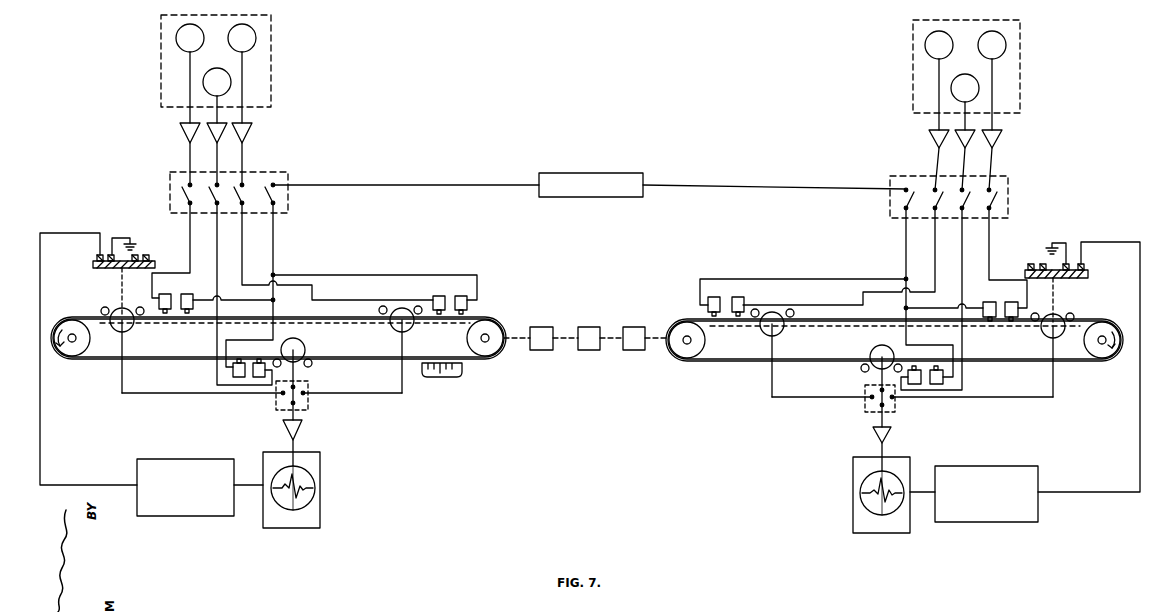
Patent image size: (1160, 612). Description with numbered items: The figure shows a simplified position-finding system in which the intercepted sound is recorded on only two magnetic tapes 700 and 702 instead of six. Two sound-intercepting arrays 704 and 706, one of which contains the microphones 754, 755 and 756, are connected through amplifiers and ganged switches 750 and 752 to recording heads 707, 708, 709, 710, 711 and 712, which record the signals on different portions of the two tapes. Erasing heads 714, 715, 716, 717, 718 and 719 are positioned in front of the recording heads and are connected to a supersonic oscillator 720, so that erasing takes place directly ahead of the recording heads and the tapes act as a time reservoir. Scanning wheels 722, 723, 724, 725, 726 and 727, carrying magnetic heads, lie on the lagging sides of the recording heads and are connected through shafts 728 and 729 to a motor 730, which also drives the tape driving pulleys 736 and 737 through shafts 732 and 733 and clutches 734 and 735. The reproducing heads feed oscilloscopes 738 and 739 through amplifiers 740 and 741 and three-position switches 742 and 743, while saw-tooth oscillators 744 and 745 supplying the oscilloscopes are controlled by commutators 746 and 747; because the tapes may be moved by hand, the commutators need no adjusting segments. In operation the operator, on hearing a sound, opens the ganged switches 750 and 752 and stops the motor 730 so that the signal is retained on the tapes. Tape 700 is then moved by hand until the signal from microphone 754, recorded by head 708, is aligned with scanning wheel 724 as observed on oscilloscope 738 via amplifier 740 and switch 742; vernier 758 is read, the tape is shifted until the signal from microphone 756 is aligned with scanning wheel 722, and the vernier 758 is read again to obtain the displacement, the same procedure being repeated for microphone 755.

The magnetic tape 700 is at (104, 360).
The magnetic tape 702 is at (1076, 362).
The sound-intercepting array 704 is at (272, 64).
The sound-intercepting array 706 is at (912, 64).
The recording head 707 is at (165, 293).
The recording head 708 is at (259, 378).
The recording head 709 is at (440, 295).
The recording head 710 is at (738, 297).
The recording head 711 is at (916, 385).
The recording head 712 is at (1010, 302).
The erasing head 714 is at (187, 294).
The erasing head 715 is at (239, 378).
The erasing head 716 is at (464, 296).
The erasing head 717 is at (710, 297).
The erasing head 718 is at (937, 385).
The erasing head 719 is at (992, 302).
The supersonic oscillator 720 is at (620, 173).
The scanning wheel 722 is at (134, 326).
The scanning wheel 723 is at (412, 327).
The scanning wheel 724 is at (303, 345).
The scanning wheel 725 is at (763, 332).
The scanning wheel 726 is at (872, 353).
The scanning wheel 727 is at (1043, 334).
The shaft 728 is at (355, 323).
The shaft 729 is at (826, 328).
The motor 730 is at (595, 327).
The shaft 732 is at (565, 340).
The shaft 733 is at (612, 340).
The clutch 734 is at (537, 350).
The clutch 735 is at (630, 327).
The driving pulley 736 is at (494, 324).
The driving pulley 737 is at (683, 355).
The oscilloscope 738 is at (320, 470).
The oscilloscope 739 is at (853, 478).
The amplifier 740 is at (302, 430).
The amplifier 741 is at (872, 436).
The three-position switch 742 is at (309, 384).
The three-position switch 743 is at (864, 390).
The saw-tooth oscillator 744 is at (197, 516).
The saw-tooth oscillator 745 is at (975, 522).
The commutator 746 is at (114, 270).
The commutator 747 is at (1072, 280).
The ganged switch 750 is at (170, 184).
The ganged switch 752 is at (1008, 188).
The microphone 754 is at (231, 84).
The microphone 755 is at (256, 38).
The microphone 756 is at (176, 38).
The vernier 758 is at (440, 378).